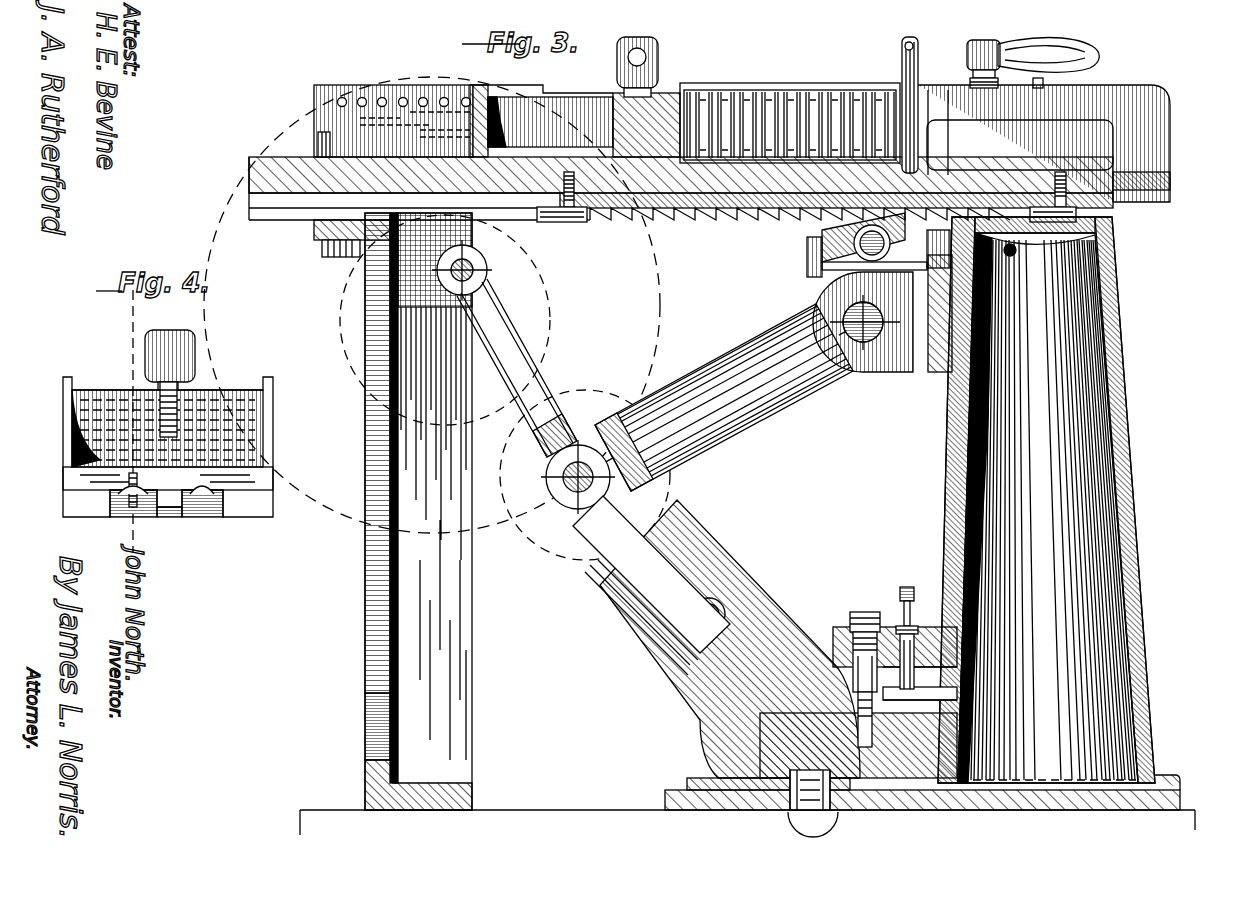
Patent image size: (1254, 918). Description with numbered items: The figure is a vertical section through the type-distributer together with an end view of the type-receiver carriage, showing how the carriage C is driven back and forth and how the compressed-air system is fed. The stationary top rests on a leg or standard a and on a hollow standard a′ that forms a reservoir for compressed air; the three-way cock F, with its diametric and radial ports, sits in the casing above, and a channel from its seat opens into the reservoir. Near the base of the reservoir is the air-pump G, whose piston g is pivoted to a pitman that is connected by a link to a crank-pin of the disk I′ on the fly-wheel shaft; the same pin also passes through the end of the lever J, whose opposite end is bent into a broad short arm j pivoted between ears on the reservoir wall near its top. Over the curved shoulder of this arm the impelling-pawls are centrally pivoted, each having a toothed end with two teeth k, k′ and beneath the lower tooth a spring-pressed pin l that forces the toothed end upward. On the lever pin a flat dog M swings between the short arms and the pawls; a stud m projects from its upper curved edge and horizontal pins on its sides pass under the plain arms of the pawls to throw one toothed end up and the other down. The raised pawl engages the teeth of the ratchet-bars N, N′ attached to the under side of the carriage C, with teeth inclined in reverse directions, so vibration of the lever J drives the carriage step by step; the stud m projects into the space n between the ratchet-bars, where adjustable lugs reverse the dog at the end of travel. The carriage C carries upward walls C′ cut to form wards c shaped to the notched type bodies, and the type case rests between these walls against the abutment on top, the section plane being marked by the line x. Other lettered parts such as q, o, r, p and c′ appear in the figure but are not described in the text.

In FIG. 3, the holes q is at (344, 106).
In FIG. 3, the carriage C is at (818, 114).
In FIG. 4, the carriage C is at (168, 436).
In FIG. 3, the carriage walls C′ is at (681, 188).
In FIG. 3, the screw o is at (568, 222).
In FIG. 4, the screw o is at (170, 518).
In FIG. 3, the wards c is at (790, 123).
In FIG. 3, the rod r is at (914, 97).
In FIG. 3, the pins p is at (926, 86).
In FIG. 3, the three-way cock F is at (1033, 51).
In FIG. 3, the leg or standard a is at (418, 511).
In FIG. 3, the pivot pin i′ is at (474, 268).
In FIG. 3, the disk I′ is at (341, 306).
In FIG. 3, the lower tooth k′ is at (517, 368).
In FIG. 3, the short arm j is at (724, 397).
In FIG. 3, the lever J is at (863, 322).
In FIG. 3, the flat dog M is at (853, 245).
In FIG. 3, the stud m is at (822, 234).
In FIG. 3, the pin l is at (938, 250).
In FIG. 3, the tooth k is at (761, 432).
In FIG. 3, the ratchet-bar N is at (640, 228).
In FIG. 4, the ratchet-bar N is at (133, 511).
In FIG. 3, the hollow standard a′ is at (1046, 500).
In FIG. 3, the air-pump G is at (716, 637).
In FIG. 3, the piston g is at (666, 640).
In FIG. 4, the section line x is at (128, 463).
In FIG. 4, the side flanges c′ is at (70, 412).
In FIG. 4, the space n is at (147, 490).
In FIG. 4, the ratchet-bar N′ is at (202, 511).